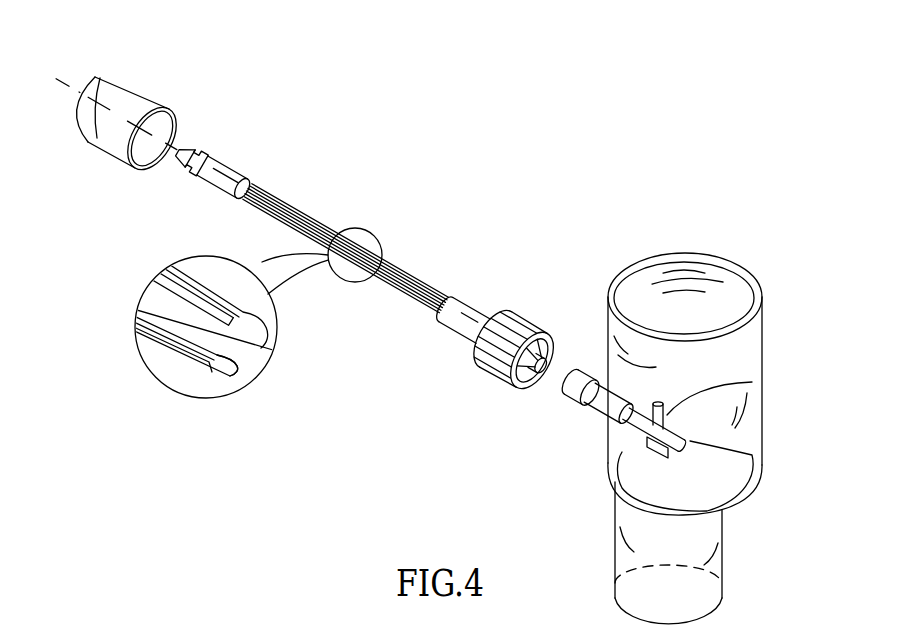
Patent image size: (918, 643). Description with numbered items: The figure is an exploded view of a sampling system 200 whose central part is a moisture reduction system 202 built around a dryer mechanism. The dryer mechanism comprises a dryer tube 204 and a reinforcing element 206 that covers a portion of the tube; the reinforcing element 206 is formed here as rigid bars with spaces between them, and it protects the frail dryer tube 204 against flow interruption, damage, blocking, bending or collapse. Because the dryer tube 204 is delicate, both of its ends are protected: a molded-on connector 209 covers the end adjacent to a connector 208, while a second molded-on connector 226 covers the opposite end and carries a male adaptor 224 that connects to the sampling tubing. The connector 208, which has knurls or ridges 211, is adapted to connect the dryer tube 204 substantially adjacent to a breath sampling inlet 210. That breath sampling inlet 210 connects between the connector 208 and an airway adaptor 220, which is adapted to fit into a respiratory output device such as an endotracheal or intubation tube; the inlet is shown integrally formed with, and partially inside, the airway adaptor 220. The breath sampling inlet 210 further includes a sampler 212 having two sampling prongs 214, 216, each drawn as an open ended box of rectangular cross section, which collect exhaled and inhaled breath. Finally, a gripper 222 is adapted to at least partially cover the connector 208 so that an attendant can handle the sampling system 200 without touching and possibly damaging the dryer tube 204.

The sampling system 200 is at (563, 170).
The moisture reduction system 202 is at (402, 239).
The dryer tube 204 is at (250, 360).
The reinforcing element 206 is at (180, 353).
The connector 208 is at (482, 381).
The molded-on connector 209 is at (455, 343).
The breath sampling inlet 210 is at (578, 420).
The knurls or ridges 211 is at (509, 305).
The sampler 212 is at (752, 455).
The sampling prong 214 is at (752, 382).
The sampling prong 216 is at (722, 505).
The airway adaptor 220 is at (778, 313).
The gripper 222 is at (133, 93).
The male adaptor 224 is at (192, 140).
The molded-on connector 226 is at (236, 160).